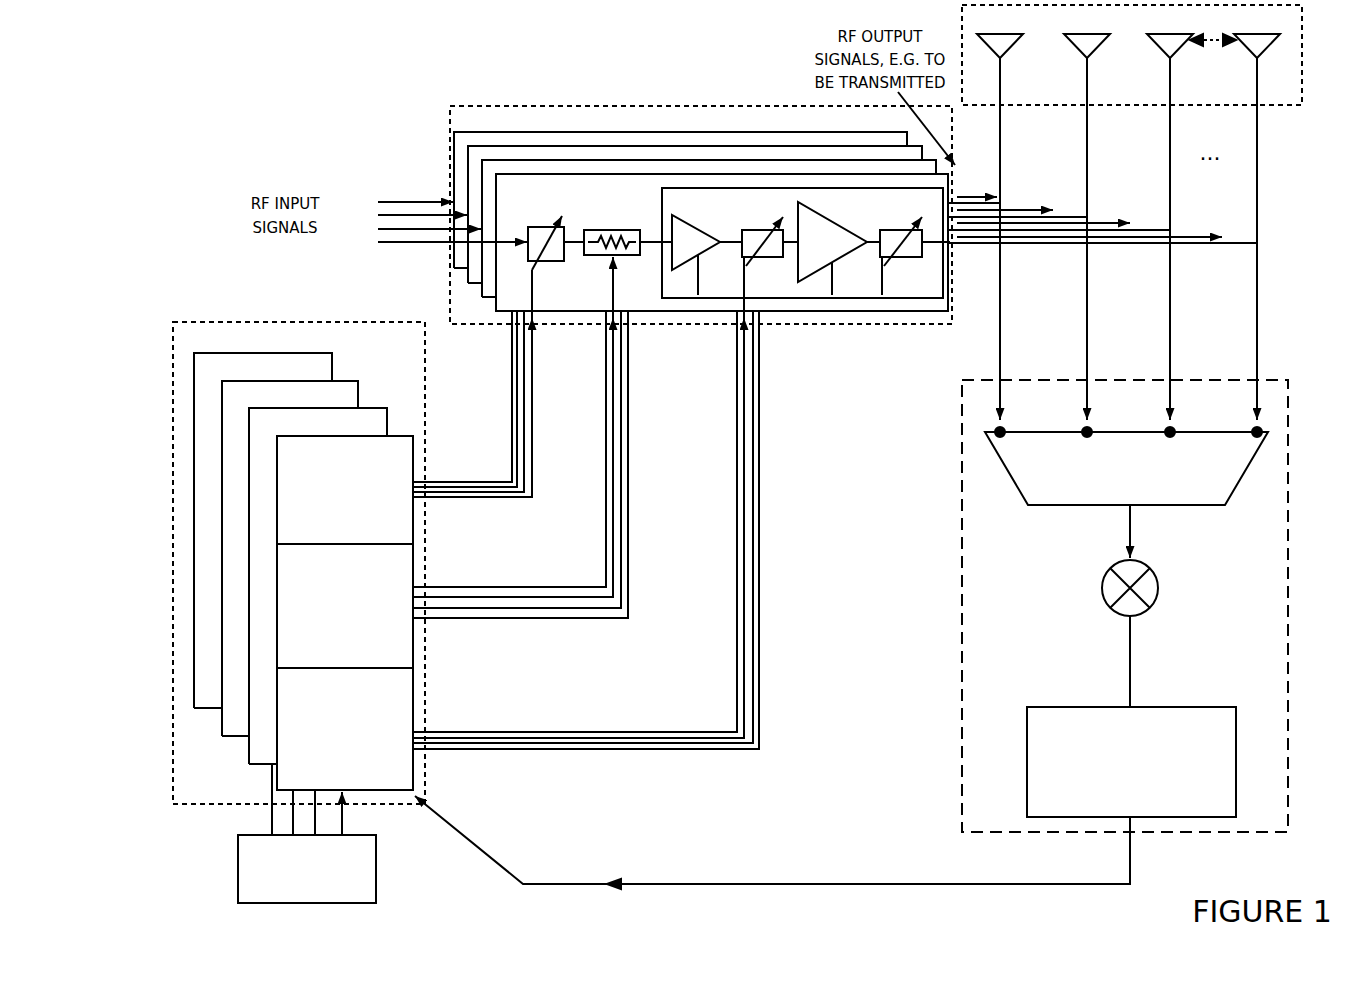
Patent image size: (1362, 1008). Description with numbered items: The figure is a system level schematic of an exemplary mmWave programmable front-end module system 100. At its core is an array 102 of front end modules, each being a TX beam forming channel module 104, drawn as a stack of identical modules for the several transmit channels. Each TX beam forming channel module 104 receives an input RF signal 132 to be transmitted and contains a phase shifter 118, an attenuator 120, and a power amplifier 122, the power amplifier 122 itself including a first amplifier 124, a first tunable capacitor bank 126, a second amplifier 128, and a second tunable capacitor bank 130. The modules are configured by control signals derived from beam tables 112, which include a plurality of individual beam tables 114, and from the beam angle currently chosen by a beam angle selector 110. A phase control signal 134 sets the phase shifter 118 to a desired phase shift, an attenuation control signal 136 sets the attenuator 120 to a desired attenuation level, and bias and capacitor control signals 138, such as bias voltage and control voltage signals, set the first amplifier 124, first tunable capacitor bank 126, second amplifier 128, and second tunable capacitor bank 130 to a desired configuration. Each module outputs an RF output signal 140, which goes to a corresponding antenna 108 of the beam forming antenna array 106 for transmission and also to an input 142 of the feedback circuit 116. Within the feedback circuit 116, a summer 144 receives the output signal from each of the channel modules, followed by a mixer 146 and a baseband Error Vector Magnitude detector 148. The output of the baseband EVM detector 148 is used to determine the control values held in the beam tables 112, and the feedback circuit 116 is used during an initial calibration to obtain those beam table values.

The mmWave programmable front-end module system 100 is at (248, 56).
The array of front end modules 102 is at (700, 106).
The TX beam forming channel module 104 is at (714, 265).
The beam forming antenna array 106 is at (1302, 53).
The antenna 108 is at (1258, 227).
The beam angle selector 110 is at (238, 872).
The beam tables 112 is at (298, 321).
The beam table 114 is at (350, 590).
The feedback circuit 116 is at (962, 614).
The phase shifter 118 is at (528, 235).
The attenuator 120 is at (628, 260).
The power amplifier 122 is at (798, 300).
The first amplifier 124 is at (690, 228).
The first tunable capacitor bank 126 is at (755, 228).
The second amplifier 128 is at (833, 231).
The second tunable capacitor bank 130 is at (888, 231).
The input RF signal 132 is at (432, 255).
The phase control signal 134 is at (496, 383).
The attenuation control signal 136 is at (545, 427).
The bias and capacitor control signal 138 is at (611, 497).
The RF output signal 140 is at (836, 544).
The feedback circuit input 142 is at (1238, 415).
The summer 144 is at (1233, 493).
The mixer 146 is at (1157, 580).
The baseband EVM detector 148 is at (1236, 760).